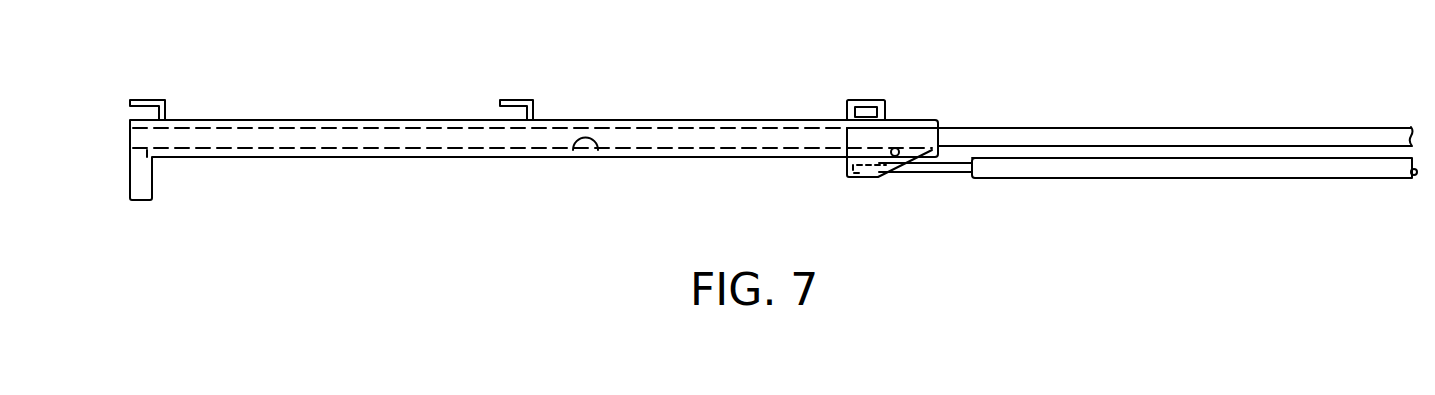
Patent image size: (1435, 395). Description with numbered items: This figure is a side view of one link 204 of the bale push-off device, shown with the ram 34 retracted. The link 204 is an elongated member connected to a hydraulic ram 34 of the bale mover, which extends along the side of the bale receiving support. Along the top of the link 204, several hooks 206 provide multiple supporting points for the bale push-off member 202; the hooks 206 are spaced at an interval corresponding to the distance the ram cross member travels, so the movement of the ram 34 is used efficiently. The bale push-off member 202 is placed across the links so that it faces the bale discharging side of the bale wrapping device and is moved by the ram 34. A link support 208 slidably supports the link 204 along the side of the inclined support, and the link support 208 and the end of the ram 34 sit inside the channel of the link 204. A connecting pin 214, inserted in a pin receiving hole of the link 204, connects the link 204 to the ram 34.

The link 204 is at (643, 120).
The hook 206 is at (140, 100).
The bale push-off member 202 is at (847, 112).
The link support 208 is at (573, 150).
The connecting pin 214 is at (897, 156).
The ram 34 is at (953, 175).